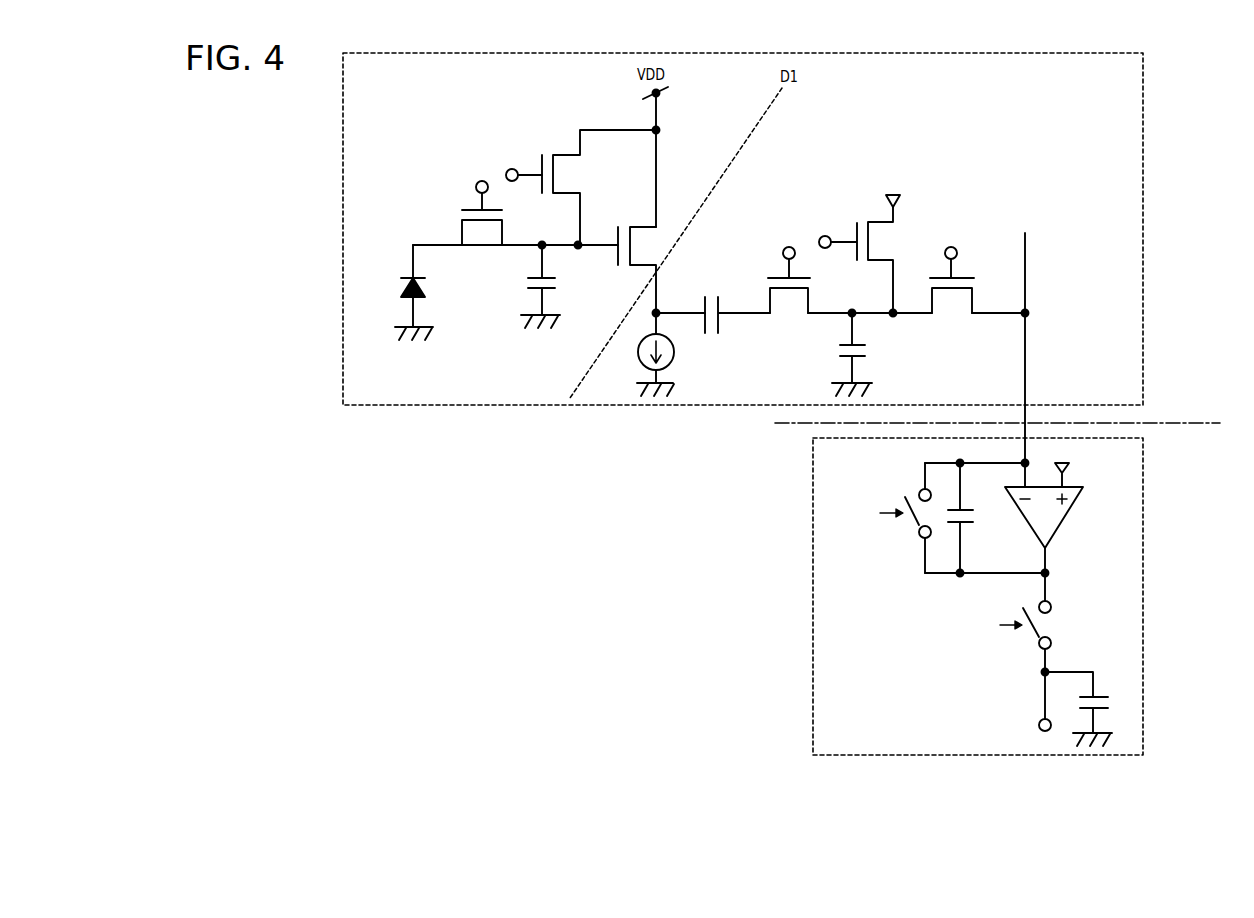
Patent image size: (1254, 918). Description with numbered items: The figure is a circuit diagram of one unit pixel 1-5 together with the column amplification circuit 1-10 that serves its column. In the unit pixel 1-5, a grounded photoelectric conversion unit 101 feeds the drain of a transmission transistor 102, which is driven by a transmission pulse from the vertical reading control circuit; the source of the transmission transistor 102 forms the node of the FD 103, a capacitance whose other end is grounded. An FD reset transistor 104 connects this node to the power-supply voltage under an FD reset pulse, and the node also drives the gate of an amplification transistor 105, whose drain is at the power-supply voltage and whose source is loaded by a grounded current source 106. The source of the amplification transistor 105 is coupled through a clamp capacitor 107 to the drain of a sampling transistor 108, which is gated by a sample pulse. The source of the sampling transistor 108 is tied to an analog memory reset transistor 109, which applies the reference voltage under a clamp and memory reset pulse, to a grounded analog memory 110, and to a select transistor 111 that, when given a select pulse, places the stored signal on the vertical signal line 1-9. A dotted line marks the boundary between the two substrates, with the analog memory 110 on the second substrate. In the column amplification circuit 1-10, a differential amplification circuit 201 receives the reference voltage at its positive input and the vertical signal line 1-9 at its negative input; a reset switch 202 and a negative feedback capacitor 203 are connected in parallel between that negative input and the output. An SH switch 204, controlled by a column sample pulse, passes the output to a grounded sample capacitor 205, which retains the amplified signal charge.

The photoelectric conversion unit 101 is at (402, 290).
The transmission transistor 102 is at (462, 232).
The FD (floating diffusion) 103 is at (528, 283).
The FD reset transistor 104 is at (572, 153).
The amplification transistor 105 is at (648, 225).
The current source 106 is at (676, 348).
The clamp capacitor 107 is at (705, 306).
The sampling transistor 108 is at (808, 298).
The analog memory reset transistor 109 is at (868, 220).
The analog memory 110 is at (840, 352).
The select transistor 111 is at (972, 296).
The unit pixel 1-5 is at (1143, 105).
The vertical signal line 1-9 is at (1025, 345).
The column amplification circuit 1-10 is at (1143, 472).
The differential amplification circuit 201 is at (1068, 514).
The reset switch 202 is at (913, 518).
The negative feedback capacitor 203 is at (973, 525).
The SH switch 204 is at (1032, 630).
The sample capacitor 205 is at (1100, 695).